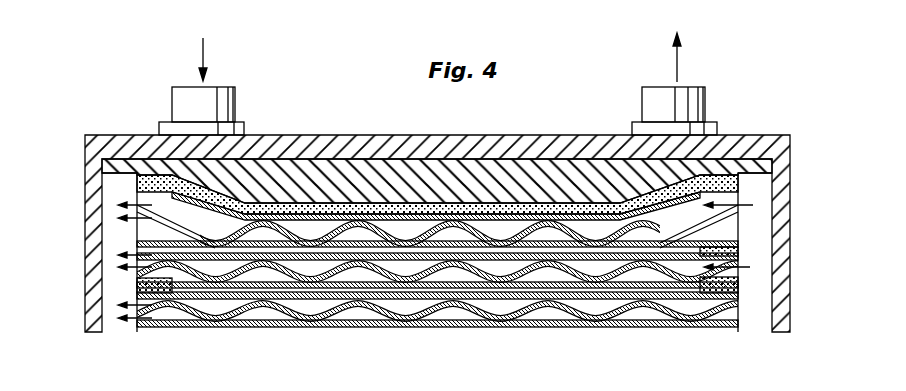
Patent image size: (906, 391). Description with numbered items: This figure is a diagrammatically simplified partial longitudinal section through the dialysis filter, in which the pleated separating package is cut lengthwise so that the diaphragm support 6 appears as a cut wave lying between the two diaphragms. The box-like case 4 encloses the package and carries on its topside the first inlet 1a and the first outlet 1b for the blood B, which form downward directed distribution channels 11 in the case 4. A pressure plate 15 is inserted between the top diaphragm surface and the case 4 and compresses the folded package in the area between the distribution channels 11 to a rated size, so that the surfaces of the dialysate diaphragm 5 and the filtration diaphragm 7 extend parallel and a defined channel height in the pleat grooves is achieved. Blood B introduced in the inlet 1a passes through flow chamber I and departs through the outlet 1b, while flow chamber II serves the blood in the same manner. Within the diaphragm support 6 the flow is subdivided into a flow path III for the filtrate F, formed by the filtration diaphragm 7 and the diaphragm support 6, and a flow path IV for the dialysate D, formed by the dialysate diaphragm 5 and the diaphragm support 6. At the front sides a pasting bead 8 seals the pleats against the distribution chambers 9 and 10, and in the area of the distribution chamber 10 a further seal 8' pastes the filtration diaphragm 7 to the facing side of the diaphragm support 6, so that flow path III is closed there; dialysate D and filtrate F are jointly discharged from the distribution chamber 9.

The first inlet 1a is at (233, 103).
The first outlet 1b is at (705, 104).
The box-like case 4 is at (312, 153).
The dialysate diaphragm 5 is at (392, 213).
The diaphragm support 6 is at (553, 229).
The filtration diaphragm 7 is at (585, 241).
The pasting bead of synthetic resin plastic 8 is at (439, 214).
The pasting bead seal 8' is at (732, 238).
The distribution chamber 9 is at (108, 333).
The distribution chamber 10 is at (758, 326).
The distribution channels 11 is at (183, 292).
The pressure plate 15 is at (604, 181).
The flow chamber I is at (213, 288).
The flow chamber II is at (236, 290).
The flow path for the filtrate III is at (357, 290).
The flow path for the dialysate IV is at (292, 288).
The blood B is at (440, 49).
The dialysate D is at (136, 200).
The filtrate F is at (117, 210).